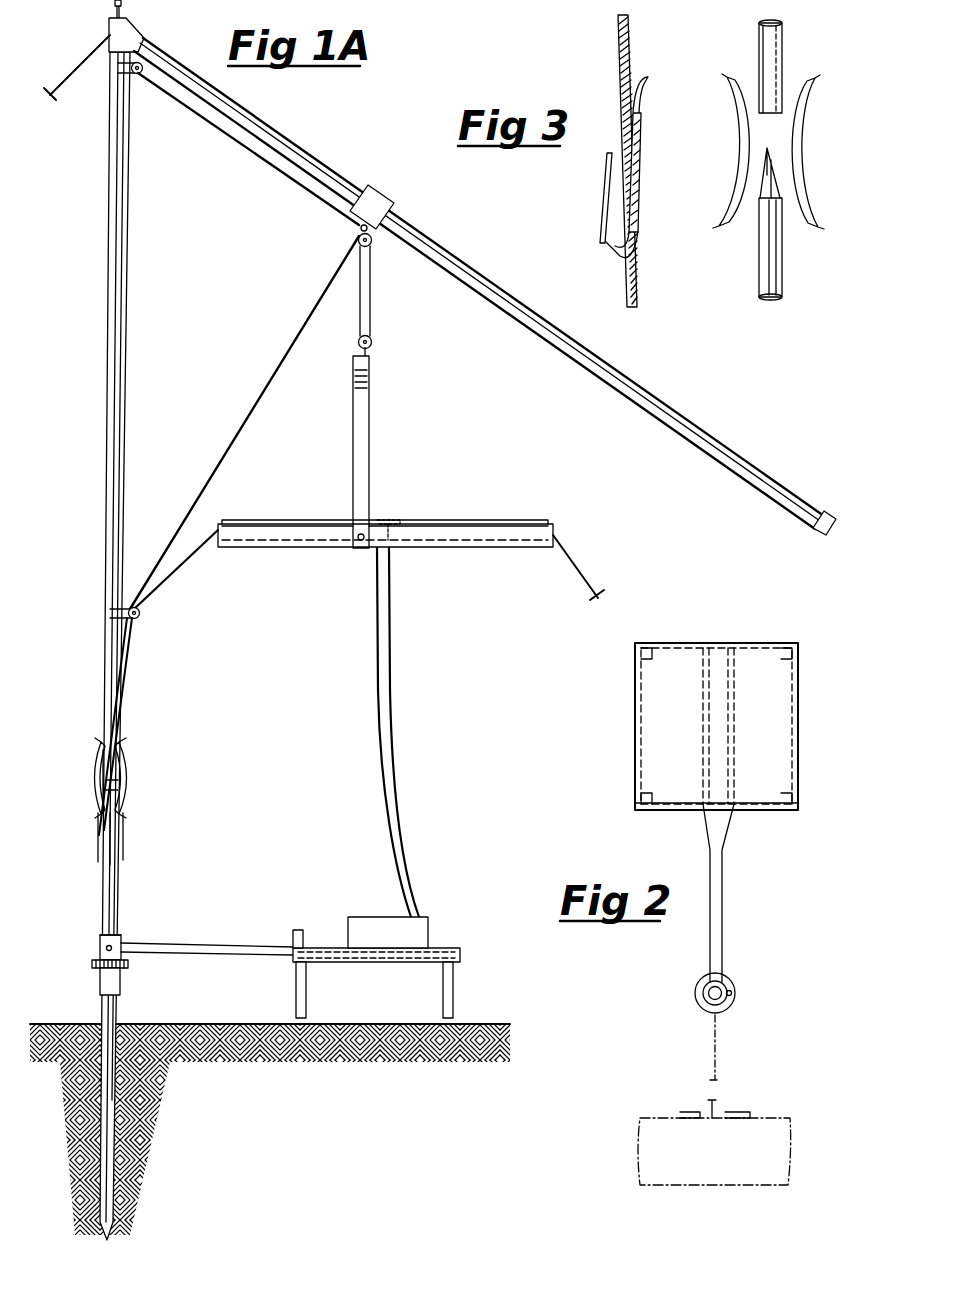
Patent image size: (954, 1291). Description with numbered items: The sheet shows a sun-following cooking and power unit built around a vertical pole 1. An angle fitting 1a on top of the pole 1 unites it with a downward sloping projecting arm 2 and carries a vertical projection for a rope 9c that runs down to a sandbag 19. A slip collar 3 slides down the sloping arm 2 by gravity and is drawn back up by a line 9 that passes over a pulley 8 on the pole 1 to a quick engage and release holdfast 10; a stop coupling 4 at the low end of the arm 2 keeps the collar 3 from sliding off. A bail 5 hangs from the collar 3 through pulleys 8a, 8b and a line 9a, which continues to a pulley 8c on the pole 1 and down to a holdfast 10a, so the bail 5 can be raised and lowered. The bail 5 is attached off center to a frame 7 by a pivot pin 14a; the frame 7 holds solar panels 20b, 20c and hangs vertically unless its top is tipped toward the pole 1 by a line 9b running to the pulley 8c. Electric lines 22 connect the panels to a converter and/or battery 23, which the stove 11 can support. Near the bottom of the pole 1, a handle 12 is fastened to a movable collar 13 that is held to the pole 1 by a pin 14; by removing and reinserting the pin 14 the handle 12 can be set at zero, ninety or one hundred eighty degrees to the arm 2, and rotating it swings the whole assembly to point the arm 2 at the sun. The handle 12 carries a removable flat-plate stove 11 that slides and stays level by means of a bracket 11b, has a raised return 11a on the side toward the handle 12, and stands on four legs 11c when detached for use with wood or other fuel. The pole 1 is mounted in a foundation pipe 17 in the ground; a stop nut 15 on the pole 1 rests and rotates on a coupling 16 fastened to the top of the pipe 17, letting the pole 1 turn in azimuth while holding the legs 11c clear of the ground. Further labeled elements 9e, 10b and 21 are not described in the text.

In FIG. 1A, the vertical pole 1 is at (110, 282).
In FIG. 2, the vertical pole 1 is at (697, 993).
In FIG. 1A, the angle fitting 1a is at (136, 36).
In FIG. 1A, the downward sloping projecting arm 2 is at (520, 310).
In FIG. 1A, the slip collar 3 is at (382, 200).
In FIG. 1A, the stop coupling 4 is at (831, 514).
In FIG. 1A, the bail 5 is at (370, 440).
In FIG. 1A, the frame 7 is at (452, 550).
In FIG. 1A, the pulley 8 is at (141, 76).
In FIG. 1A, the pulley 8a is at (372, 342).
In FIG. 1A, the pulley 8b is at (372, 242).
In FIG. 1A, the pulley 8c is at (145, 618).
In FIG. 1A, the line 9 is at (265, 153).
In FIG. 1A, the line 9a is at (322, 303).
In FIG. 3, the line 9a is at (632, 32).
In FIG. 1A, the line 9b is at (170, 578).
In FIG. 1A, the rope 9c is at (72, 62).
In FIG. 2, the rope 9c is at (710, 1067).
In FIG. 1A, the beam end cable 9e is at (595, 590).
In FIG. 1A, the quick engage and release holdfast 10 is at (128, 792).
In FIG. 3, the quick engage and release holdfast 10 is at (640, 95).
In FIG. 1A, the quick engage and release holdfast 10a is at (124, 800).
In FIG. 3, the quick engage and release holdfast 10a is at (742, 135).
In FIG. 1A, the clip lower arm 10b is at (92, 772).
In FIG. 3, the clip lower arm 10b is at (778, 140).
In FIG. 1A, the stove 11 is at (440, 948).
In FIG. 2, the stove 11 is at (798, 737).
In FIG. 1A, the raised return 11a is at (293, 935).
In FIG. 2, the raised return 11a is at (690, 812).
In FIG. 2, the bracket 11b is at (732, 712).
In FIG. 1A, the legs 11c is at (445, 990).
In FIG. 2, the legs 11c is at (642, 655).
In FIG. 1A, the handle 12 is at (190, 943).
In FIG. 2, the handle 12 is at (706, 738).
In FIG. 1A, the moveable collar 13 is at (100, 938).
In FIG. 2, the moveable collar 13 is at (722, 980).
In FIG. 1A, the pin 14 is at (100, 948).
In FIG. 2, the pin 14 is at (735, 992).
In FIG. 1A, the pivot pin 14a is at (358, 548).
In FIG. 1A, the stop nut 15 is at (128, 965).
In FIG. 2, the stop nut 15 is at (730, 1008).
In FIG. 1A, the coupling 16 is at (100, 990).
In FIG. 1A, the foundation pipe 17 is at (112, 1100).
In FIG. 2, the sandbag 19 is at (648, 1115).
In FIG. 1A, the solar panel 20b is at (482, 520).
In FIG. 1A, the solar panel 20c is at (272, 520).
In FIG. 1A, the beam clip 21 is at (392, 520).
In FIG. 1A, the electric lines 22 is at (381, 662).
In FIG. 1A, the converter and/or battery 23 is at (376, 917).